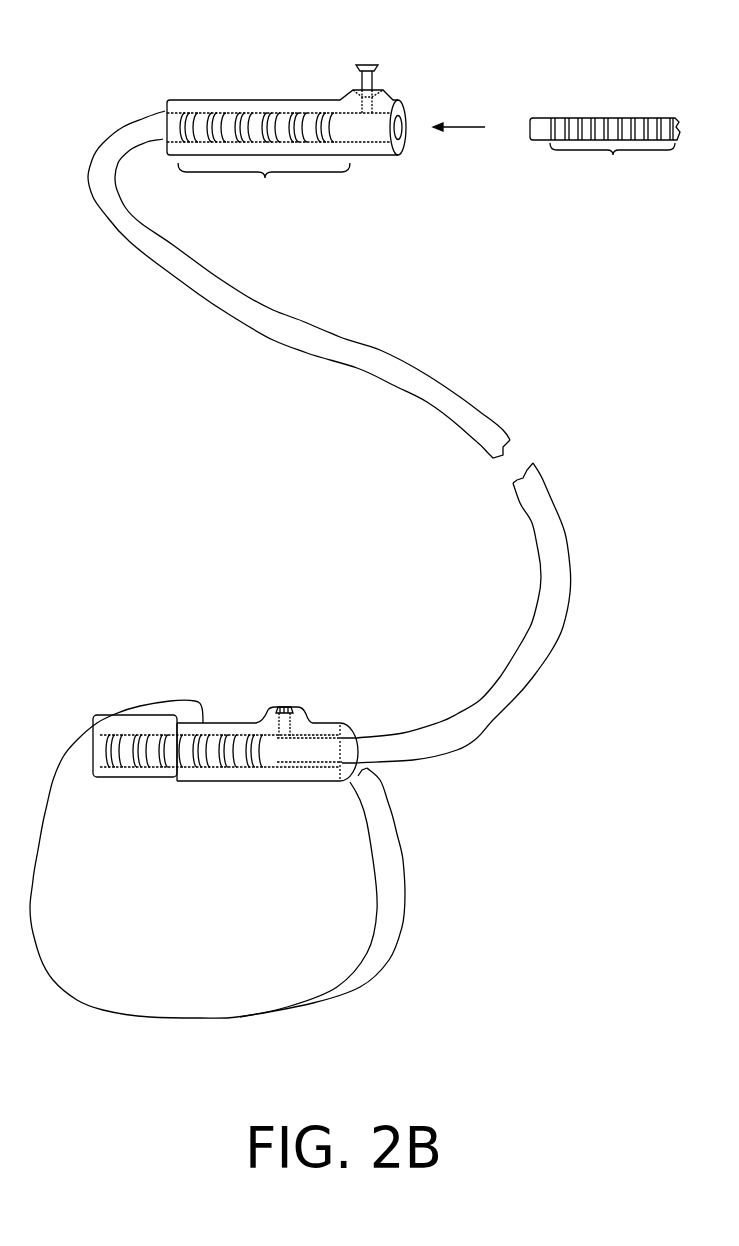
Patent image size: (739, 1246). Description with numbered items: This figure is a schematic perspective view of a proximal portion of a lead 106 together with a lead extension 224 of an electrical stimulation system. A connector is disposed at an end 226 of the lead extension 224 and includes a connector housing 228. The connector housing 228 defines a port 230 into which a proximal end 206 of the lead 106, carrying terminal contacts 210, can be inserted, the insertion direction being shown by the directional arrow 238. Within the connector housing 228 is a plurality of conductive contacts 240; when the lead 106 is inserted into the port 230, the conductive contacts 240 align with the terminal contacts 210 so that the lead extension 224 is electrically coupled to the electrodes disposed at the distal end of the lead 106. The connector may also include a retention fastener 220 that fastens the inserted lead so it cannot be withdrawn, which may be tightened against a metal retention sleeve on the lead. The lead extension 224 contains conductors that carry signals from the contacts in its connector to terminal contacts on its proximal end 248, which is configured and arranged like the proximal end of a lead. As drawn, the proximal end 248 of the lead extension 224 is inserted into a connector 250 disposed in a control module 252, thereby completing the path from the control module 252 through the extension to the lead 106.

The lead 106 is at (611, 115).
The proximal end of the lead 206 is at (605, 100).
The terminal contacts 210 is at (612, 159).
The retention fastener 220 is at (378, 62).
The lead extension 224 is at (351, 336).
The end of the lead extension 226 is at (162, 97).
The connector housing 228 is at (205, 106).
The port 230 is at (412, 142).
The directional arrow 238 is at (466, 126).
The conductive contacts 240 is at (264, 181).
The proximal end of the lead extension 248 is at (378, 720).
The connector 250 is at (225, 722).
The control module 252 is at (76, 703).